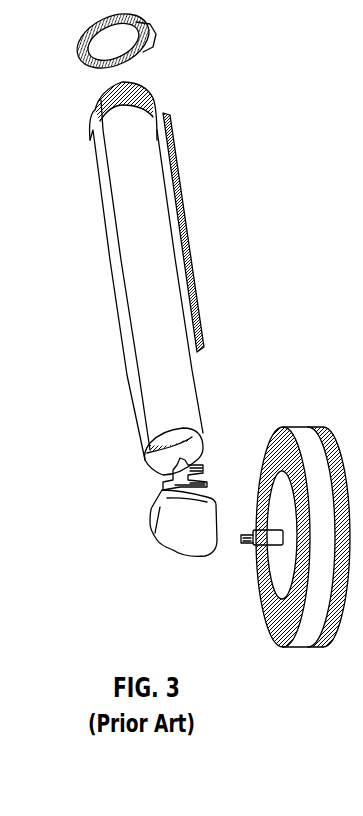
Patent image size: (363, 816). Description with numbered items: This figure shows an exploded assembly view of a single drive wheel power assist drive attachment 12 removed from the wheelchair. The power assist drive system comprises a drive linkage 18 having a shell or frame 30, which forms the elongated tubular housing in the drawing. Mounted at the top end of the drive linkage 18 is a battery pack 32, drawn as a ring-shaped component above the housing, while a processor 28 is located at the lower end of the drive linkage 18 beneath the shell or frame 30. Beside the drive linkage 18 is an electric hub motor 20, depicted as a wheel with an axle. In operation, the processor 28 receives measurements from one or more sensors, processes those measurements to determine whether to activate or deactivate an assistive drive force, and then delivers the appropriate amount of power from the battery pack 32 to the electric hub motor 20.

The power assist drive attachment 12 is at (217, 278).
The drive linkage 18 is at (153, 180).
The electric hub motor 20 is at (276, 575).
The processor 28 is at (162, 490).
The shell or frame 30 is at (112, 272).
The battery pack 32 is at (113, 99).